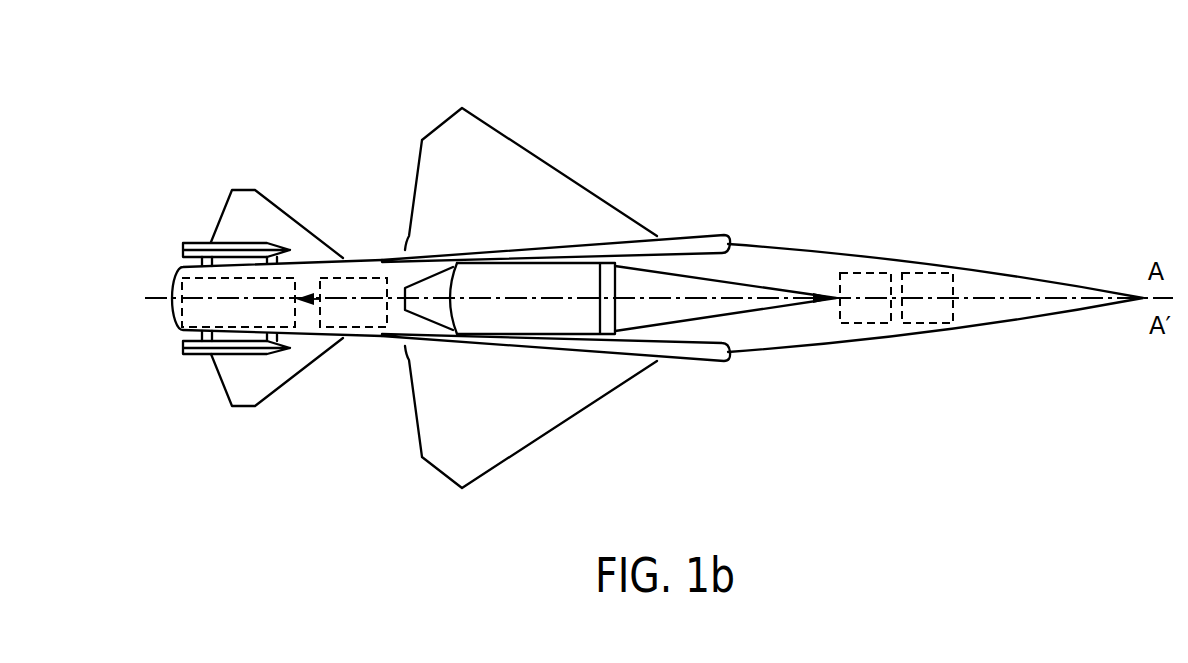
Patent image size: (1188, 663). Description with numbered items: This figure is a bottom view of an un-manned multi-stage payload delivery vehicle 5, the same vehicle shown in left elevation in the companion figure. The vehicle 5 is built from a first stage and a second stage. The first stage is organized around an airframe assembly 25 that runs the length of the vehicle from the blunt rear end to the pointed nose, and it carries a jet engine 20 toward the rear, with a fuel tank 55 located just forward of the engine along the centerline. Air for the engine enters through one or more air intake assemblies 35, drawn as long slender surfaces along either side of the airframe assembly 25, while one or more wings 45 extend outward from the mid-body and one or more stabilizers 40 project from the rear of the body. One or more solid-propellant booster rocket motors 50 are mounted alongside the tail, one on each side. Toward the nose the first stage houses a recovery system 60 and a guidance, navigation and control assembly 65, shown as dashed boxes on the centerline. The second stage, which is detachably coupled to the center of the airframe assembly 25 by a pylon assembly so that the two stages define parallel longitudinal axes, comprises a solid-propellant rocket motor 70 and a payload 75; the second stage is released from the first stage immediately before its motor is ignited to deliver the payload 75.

The payload delivery vehicle 5 is at (648, 84).
The jet engine 20 is at (226, 310).
The airframe assembly 25 is at (833, 252).
The air intake assembly 35 is at (713, 233).
The stabilizer 40 is at (242, 190).
The wing 45 is at (451, 114).
The solid-propellant booster rocket motor 50 is at (192, 248).
The fuel tank 55 is at (341, 310).
The recovery system 60 is at (853, 310).
The guidance, navigation and control (GNC) assembly 65 is at (915, 310).
The solid-propellant rocket motor 70 is at (497, 307).
The payload 75 is at (752, 305).